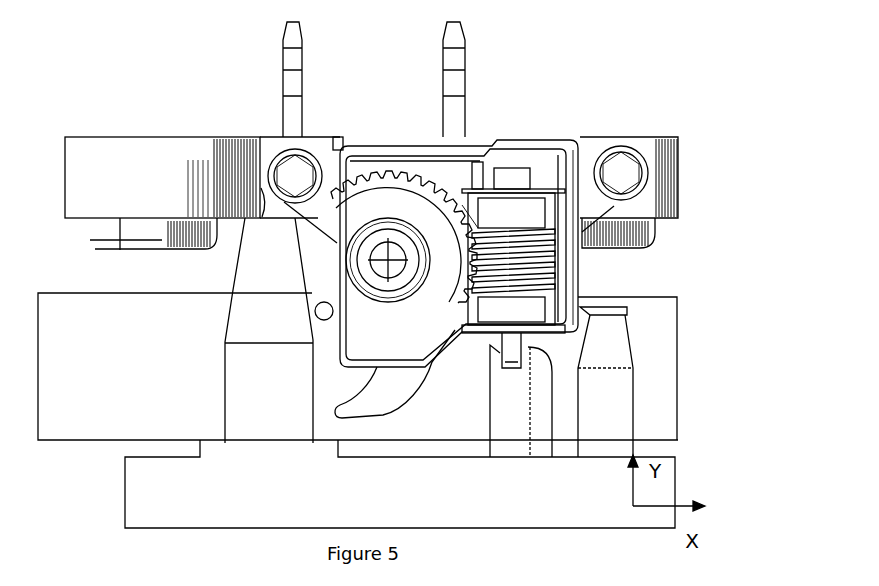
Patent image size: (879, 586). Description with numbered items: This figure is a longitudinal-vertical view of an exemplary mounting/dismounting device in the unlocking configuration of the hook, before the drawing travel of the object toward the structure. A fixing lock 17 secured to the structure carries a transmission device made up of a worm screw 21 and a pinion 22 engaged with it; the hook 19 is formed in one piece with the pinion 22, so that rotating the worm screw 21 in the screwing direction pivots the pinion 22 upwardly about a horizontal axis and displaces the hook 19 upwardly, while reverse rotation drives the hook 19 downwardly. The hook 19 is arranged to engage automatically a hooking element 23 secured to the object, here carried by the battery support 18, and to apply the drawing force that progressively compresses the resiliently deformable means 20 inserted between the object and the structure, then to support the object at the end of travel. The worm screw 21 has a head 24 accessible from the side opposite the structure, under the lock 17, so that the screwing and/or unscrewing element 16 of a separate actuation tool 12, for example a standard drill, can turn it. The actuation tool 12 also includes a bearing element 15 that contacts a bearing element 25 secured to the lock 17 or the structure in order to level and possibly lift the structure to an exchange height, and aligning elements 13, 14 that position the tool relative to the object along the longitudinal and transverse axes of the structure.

The actuation tool 12 is at (578, 510).
The aligning element 13 is at (265, 272).
The aligning element 14 is at (617, 348).
The bearing element 15 is at (280, 222).
The screwing and/or unscrewing element 16 is at (513, 398).
The fixing lock 17 is at (706, 187).
The battery support 18 is at (137, 356).
The hook 19 is at (383, 400).
The resiliently deformable means 20 is at (152, 235).
The worm screw 21 is at (545, 266).
The pinion 22 is at (430, 220).
The hooking element 23 is at (322, 318).
The head 24 is at (549, 400).
The bearing element 25 is at (264, 220).